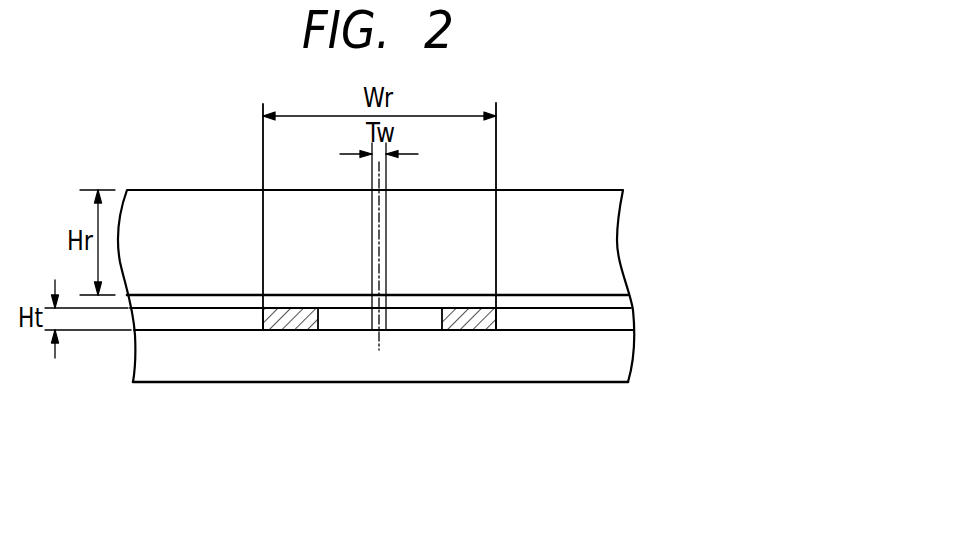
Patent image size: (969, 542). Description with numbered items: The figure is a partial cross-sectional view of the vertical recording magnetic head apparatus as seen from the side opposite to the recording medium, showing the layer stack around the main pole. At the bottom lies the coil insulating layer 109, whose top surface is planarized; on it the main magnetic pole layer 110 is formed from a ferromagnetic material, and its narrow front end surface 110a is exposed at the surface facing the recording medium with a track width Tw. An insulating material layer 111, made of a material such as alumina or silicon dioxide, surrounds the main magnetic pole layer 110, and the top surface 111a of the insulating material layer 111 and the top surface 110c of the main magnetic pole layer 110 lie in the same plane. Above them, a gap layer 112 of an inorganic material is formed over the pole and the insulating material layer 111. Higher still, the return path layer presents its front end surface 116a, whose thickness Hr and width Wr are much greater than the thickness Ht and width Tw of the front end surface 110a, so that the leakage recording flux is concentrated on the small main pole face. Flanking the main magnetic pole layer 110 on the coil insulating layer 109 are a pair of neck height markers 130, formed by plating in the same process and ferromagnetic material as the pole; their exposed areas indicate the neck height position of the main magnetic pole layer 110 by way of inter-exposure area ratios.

The coil insulating layer 109 is at (510, 365).
The main magnetic pole layer 110 is at (378, 317).
The front end surface 110a is at (378, 317).
The top surface 110c is at (374, 300).
The insulating material layer 111 is at (178, 320).
The top surface 111a is at (537, 304).
The gap layer 112 is at (208, 295).
The front end surface 116a is at (483, 230).
The neck height markers 130 is at (283, 322).